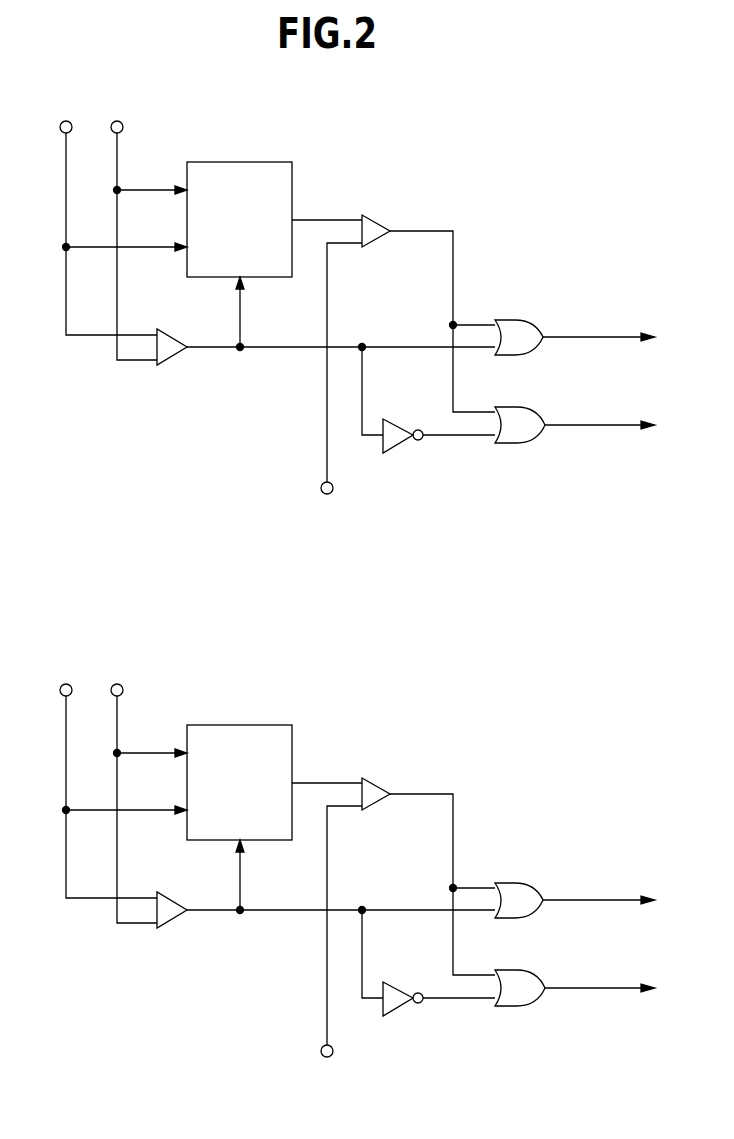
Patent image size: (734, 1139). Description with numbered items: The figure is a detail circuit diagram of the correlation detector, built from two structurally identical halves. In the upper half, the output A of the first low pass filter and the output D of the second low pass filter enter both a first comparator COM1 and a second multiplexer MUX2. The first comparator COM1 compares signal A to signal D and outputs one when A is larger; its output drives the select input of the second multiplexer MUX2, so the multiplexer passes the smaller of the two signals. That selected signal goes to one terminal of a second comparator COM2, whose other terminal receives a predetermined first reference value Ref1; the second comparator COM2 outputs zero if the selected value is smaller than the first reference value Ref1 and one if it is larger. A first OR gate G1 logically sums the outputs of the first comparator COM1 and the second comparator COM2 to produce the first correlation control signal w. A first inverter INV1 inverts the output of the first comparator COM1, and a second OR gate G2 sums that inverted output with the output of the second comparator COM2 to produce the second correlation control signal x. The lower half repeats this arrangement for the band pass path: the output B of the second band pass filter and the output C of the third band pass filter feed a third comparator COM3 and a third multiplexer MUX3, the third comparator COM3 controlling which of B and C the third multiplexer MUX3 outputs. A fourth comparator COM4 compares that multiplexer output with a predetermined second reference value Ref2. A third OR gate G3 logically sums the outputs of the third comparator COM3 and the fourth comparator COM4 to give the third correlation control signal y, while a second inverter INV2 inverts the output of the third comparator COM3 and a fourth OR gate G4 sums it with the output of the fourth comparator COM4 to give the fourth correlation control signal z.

The output of the first low pass filter A is at (122, 211).
The output of the second low pass filter D is at (147, 224).
The output of the second band pass filter B is at (122, 774).
The output of the third band pass filter C is at (147, 787).
The second multiplexer MUX2 is at (274, 254).
The third multiplexer MUX3 is at (274, 817).
The first comparator COM1 is at (181, 362).
The second comparator COM2 is at (385, 226).
The third comparator COM3 is at (325, 928).
The fourth comparator COM4 is at (428, 860).
The first inverter INV1 is at (403, 444).
The second inverter INV2 is at (428, 981).
The first OR gate G1 is at (530, 320).
The second OR gate G2 is at (537, 441).
The third OR gate G3 is at (575, 878).
The fourth OR gate G4 is at (575, 1012).
The first reference value Ref1 is at (331, 387).
The second reference value Ref2 is at (331, 950).
The first correlation control signal w is at (599, 319).
The second correlation control signal x is at (596, 405).
The third correlation control signal y is at (596, 880).
The fourth correlation control signal z is at (596, 967).